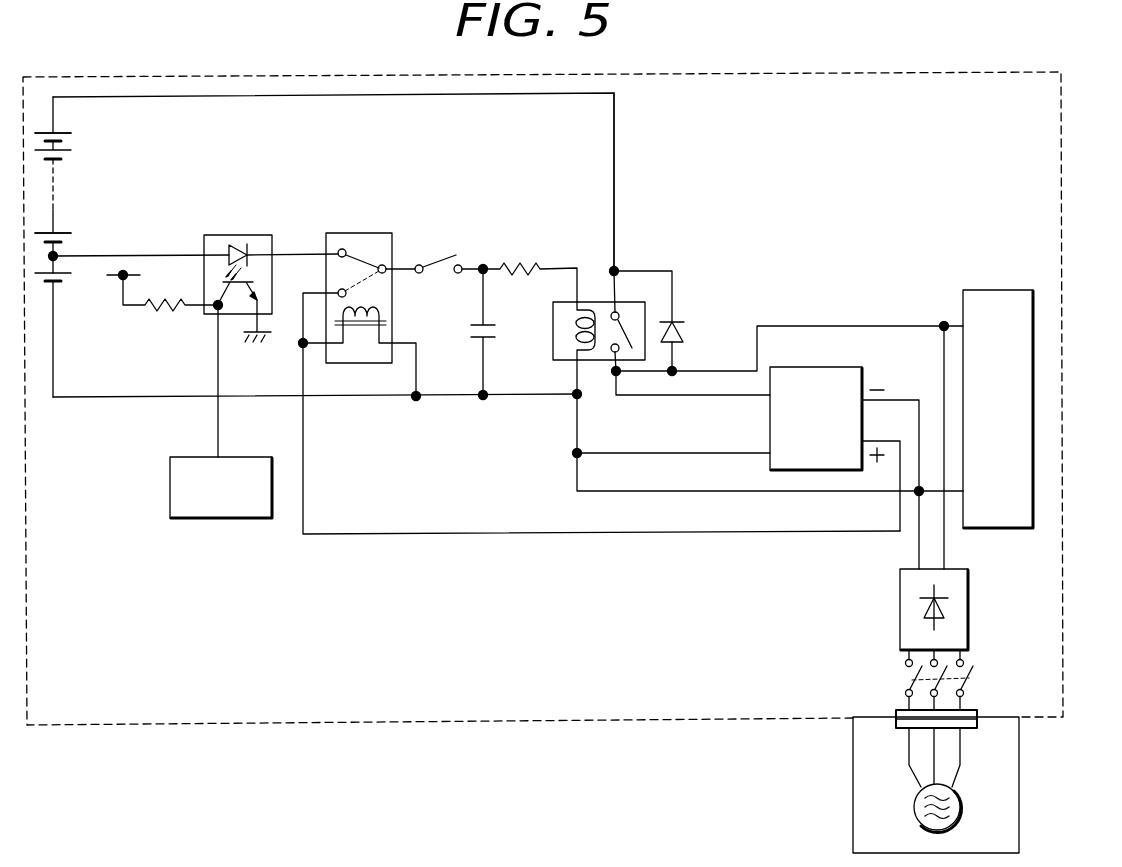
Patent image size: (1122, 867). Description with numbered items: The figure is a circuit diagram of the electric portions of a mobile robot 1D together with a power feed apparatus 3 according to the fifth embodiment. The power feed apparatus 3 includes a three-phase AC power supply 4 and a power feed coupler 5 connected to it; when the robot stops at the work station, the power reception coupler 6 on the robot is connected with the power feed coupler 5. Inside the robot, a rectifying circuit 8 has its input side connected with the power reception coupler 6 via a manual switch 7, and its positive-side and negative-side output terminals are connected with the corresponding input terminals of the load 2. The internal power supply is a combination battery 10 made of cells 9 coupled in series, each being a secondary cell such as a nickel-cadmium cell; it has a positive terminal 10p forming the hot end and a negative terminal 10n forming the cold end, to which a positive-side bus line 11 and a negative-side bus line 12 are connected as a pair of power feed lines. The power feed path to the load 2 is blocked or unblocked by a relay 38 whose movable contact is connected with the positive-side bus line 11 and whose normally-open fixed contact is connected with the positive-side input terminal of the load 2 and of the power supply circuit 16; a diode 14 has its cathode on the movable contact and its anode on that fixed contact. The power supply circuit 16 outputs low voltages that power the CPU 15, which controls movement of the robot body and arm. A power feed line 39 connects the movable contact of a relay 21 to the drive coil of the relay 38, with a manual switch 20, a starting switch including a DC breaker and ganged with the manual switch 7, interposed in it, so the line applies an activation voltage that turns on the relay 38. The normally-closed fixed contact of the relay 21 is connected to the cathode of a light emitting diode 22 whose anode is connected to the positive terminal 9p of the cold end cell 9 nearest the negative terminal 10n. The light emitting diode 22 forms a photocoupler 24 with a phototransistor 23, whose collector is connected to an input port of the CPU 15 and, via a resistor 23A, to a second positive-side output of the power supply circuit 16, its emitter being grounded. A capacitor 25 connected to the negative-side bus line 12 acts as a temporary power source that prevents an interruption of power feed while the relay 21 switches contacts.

The mobile robot 1D is at (1063, 85).
The load 2 is at (1010, 290).
The power feed apparatus 3 is at (1020, 749).
The three-phase AC power supply 4 is at (961, 806).
The power feed coupler 5 is at (897, 722).
The power reception coupler 6 is at (896, 712).
The manual switch 7 is at (975, 673).
The rectifying circuit 8 is at (969, 607).
The cell 9 is at (70, 277).
The positive terminal of cell 9p is at (58, 254).
The combination battery 10 is at (90, 159).
The positive terminal 10p is at (58, 131).
The negative terminal 10n is at (62, 284).
The positive-side bus line 11 is at (617, 178).
The negative-side bus line 12 is at (512, 399).
The diode 14 is at (685, 331).
The CPU 15 is at (255, 457).
The power supply circuit 16 is at (832, 367).
The manual switch 20 is at (445, 254).
The relay 21 is at (378, 232).
The light emitting diode 22 is at (236, 240).
The phototransistor 23 is at (220, 288).
The resistor 23A is at (166, 309).
The photocoupler 24 is at (272, 238).
The capacitor 25 is at (470, 334).
The relay 38 is at (553, 343).
The power feed line 39 is at (556, 265).